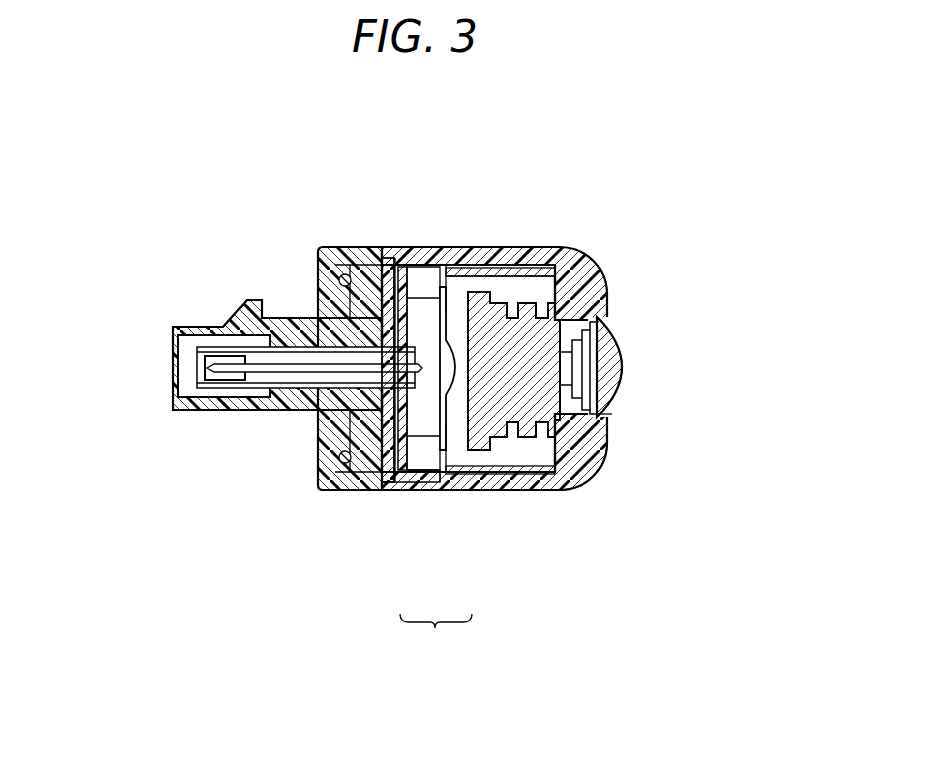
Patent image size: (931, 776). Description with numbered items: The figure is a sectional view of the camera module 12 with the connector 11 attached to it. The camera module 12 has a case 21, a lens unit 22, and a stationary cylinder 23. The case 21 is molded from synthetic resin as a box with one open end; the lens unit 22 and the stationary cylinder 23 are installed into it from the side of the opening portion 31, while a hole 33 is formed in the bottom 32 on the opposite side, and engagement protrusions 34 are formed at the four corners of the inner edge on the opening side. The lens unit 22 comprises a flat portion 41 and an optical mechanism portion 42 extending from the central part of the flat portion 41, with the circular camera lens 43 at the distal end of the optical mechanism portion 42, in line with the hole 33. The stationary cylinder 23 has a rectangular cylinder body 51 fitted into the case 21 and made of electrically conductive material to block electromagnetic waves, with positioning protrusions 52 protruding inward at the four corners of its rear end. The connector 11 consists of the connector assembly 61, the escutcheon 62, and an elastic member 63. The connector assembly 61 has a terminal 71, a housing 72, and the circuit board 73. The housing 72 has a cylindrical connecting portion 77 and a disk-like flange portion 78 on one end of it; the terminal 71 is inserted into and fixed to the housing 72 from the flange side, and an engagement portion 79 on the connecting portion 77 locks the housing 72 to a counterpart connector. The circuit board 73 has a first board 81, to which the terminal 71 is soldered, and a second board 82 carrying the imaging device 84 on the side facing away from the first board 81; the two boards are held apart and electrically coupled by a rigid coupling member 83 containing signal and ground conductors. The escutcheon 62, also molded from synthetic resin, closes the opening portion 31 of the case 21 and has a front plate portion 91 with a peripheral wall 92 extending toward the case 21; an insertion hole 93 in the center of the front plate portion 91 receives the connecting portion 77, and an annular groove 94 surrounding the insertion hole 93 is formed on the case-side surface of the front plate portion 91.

The connector 11 is at (317, 240).
The camera module 12 is at (556, 240).
The case 21 is at (576, 492).
The lens unit 22 is at (602, 265).
The stationary cylinder 23 is at (487, 266).
The opening portion 31 is at (402, 490).
The bottom 32 is at (603, 447).
The hole 33 is at (612, 415).
The engagement protrusions 34 is at (418, 262).
The flat portion 41 is at (483, 447).
The optical mechanism portion 42 is at (537, 412).
The camera lens 43 is at (617, 367).
The cylinder body 51 is at (541, 297).
The positioning protrusions 52 is at (457, 295).
The connector assembly 61 is at (294, 417).
The escutcheon 62 is at (309, 498).
The elastic member 63 is at (343, 465).
The terminal 71 is at (202, 332).
The housing 72 is at (240, 424).
The circuit board 73 is at (436, 640).
The connecting portion 77 is at (180, 412).
The flange portion 78 is at (382, 258).
The engagement portion 79 is at (250, 302).
The first board 81 is at (420, 480).
The second board 82 is at (440, 478).
The coupling member 83 is at (427, 405).
The imaging device 84 is at (467, 365).
The front plate portion 91 is at (322, 438).
The peripheral wall 92 is at (392, 262).
The insertion hole 93 is at (314, 306).
The annular groove 94 is at (335, 492).